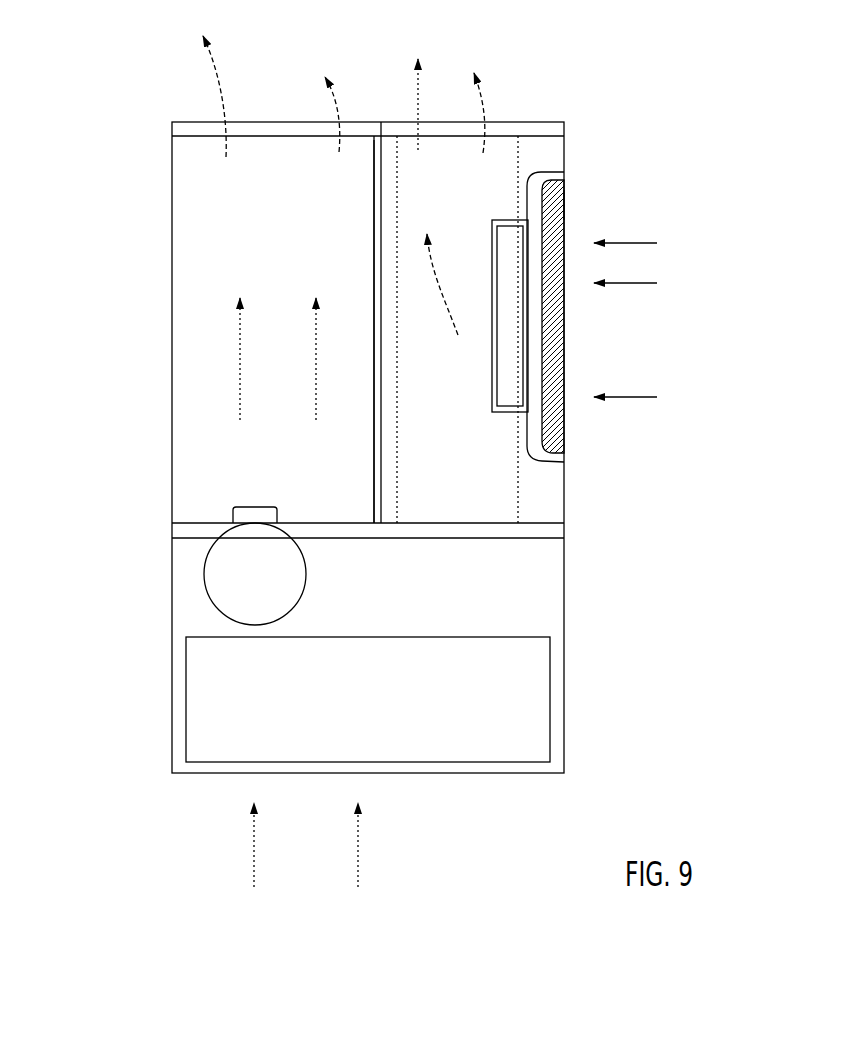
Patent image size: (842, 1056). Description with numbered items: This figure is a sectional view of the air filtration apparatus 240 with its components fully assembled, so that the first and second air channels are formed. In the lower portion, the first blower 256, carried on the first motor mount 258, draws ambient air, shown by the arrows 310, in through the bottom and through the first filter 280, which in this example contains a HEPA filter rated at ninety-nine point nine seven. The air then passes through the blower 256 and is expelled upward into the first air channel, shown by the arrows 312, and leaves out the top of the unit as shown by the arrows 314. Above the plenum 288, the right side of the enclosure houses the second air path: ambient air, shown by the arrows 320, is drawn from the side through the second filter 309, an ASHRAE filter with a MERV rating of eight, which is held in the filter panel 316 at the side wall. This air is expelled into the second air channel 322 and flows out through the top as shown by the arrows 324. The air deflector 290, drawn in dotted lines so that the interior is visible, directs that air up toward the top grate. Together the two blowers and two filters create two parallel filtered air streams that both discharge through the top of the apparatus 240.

The air filtration apparatus 240 is at (117, 467).
The first blower 256 is at (203, 582).
The first motor mount 258 is at (566, 530).
The first filter 280 is at (390, 712).
The plenum 288 is at (390, 502).
The air deflector 290 is at (486, 454).
The second filter 309 is at (568, 203).
The air drawn from ambient environment 310 is at (358, 858).
The air channel flow arrows 312 is at (315, 363).
The air out the top 314 is at (262, 88).
The filter panel 316 is at (570, 354).
The ambient air drawn by second blower 320 is at (644, 321).
The second air channel 322 is at (448, 206).
The air out through the top 324 is at (451, 85).